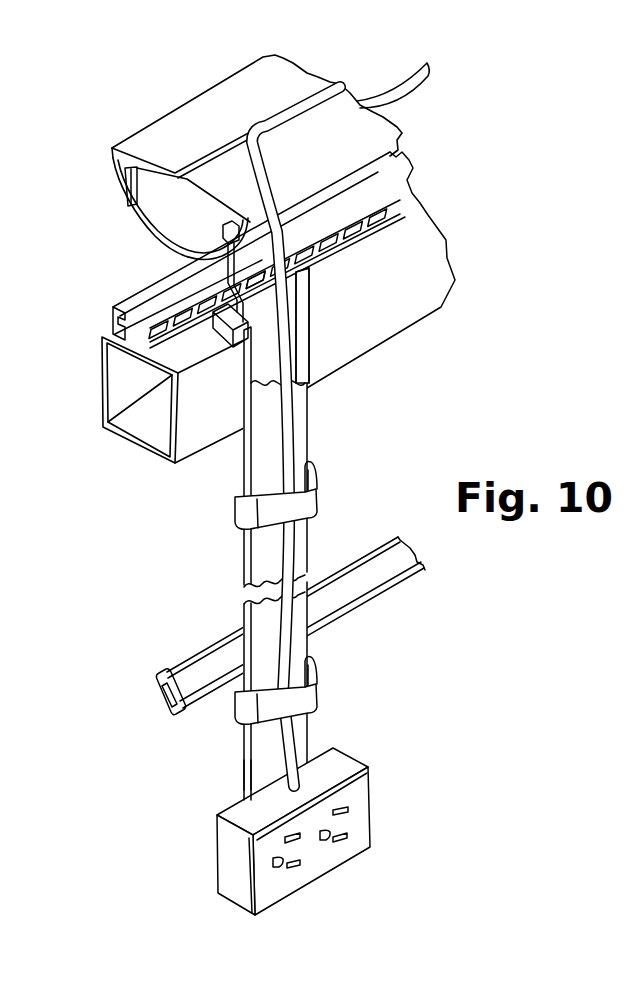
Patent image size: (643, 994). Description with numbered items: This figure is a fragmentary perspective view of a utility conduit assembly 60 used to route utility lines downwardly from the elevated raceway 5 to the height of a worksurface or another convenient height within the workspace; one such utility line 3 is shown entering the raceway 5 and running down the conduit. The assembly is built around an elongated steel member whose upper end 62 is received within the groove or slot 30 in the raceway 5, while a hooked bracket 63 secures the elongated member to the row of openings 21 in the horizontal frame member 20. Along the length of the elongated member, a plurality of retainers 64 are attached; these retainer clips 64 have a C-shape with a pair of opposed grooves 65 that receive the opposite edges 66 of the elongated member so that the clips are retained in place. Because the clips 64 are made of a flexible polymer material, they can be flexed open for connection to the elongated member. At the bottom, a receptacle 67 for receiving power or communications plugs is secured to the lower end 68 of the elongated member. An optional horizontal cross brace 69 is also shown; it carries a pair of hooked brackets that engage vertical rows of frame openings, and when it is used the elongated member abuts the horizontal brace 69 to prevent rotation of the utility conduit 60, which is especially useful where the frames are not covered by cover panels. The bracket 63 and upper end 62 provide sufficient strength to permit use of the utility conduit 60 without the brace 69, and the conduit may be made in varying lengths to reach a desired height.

The raceway 5 is at (198, 117).
The cable 3 is at (387, 85).
The row of openings 21 is at (418, 218).
The groove or slot 30 is at (123, 197).
The upper end 62 is at (253, 257).
The hooked bracket 63 is at (303, 273).
The horizontal frame member 20 is at (202, 424).
The opposed grooves 65 is at (305, 463).
The retainers 64 is at (318, 495).
The opposite edges 66 is at (245, 550).
The utility conduit assembly 60 is at (234, 628).
The horizontal cross brace 69 is at (403, 578).
The receptacle 67 is at (358, 812).
The lower end 68 is at (243, 800).